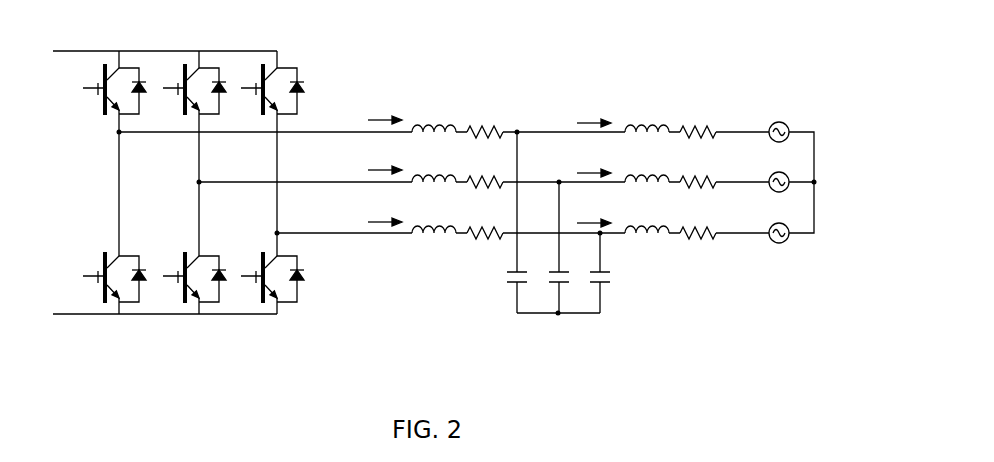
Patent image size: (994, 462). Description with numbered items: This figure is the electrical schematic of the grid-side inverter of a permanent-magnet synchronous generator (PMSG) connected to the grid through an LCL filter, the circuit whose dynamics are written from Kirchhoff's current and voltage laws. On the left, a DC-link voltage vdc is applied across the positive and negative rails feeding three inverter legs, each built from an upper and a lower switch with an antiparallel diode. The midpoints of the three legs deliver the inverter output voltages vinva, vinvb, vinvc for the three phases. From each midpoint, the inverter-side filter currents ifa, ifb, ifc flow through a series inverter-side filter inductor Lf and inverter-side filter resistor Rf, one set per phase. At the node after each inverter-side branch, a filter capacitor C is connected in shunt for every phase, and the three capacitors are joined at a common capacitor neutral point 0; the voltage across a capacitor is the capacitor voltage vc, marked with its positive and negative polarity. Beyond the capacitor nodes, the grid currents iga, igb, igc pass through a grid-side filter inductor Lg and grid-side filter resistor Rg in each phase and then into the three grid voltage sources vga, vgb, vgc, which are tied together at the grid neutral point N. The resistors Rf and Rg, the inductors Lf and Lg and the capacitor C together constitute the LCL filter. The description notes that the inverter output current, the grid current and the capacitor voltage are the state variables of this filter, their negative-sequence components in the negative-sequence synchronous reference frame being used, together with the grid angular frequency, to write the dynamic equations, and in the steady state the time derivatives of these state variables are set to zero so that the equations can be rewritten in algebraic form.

The DC-link voltage vdc is at (160, 184).
The inverter output voltage of phase a vinva is at (265, 115).
The inverter output voltage of phase b vinvb is at (305, 171).
The inverter output voltage of phase c vinvc is at (344, 221).
The inverter-side filter current of phase a ifa is at (385, 108).
The inverter-side filter current of phase b ifb is at (385, 158).
The inverter-side filter current of phase c ifc is at (385, 210).
The inverter-side filter inductor Lf is at (434, 163).
The inverter-side filter resistor Rf is at (485, 166).
The grid current of phase a iga is at (593, 110).
The grid current of phase b igb is at (593, 160).
The grid current of phase c igc is at (593, 210).
The grid-side filter inductor Lg is at (647, 163).
The grid-side filter resistor Rg is at (698, 166).
The grid voltage of phase a vga is at (760, 120).
The grid voltage of phase b vgb is at (760, 170).
The grid voltage of phase c vgc is at (760, 221).
The grid neutral point N is at (812, 182).
The filter capacitor C is at (547, 222).
The capacitor voltage vc is at (624, 280).
The capacitor neutral point 0 is at (558, 332).